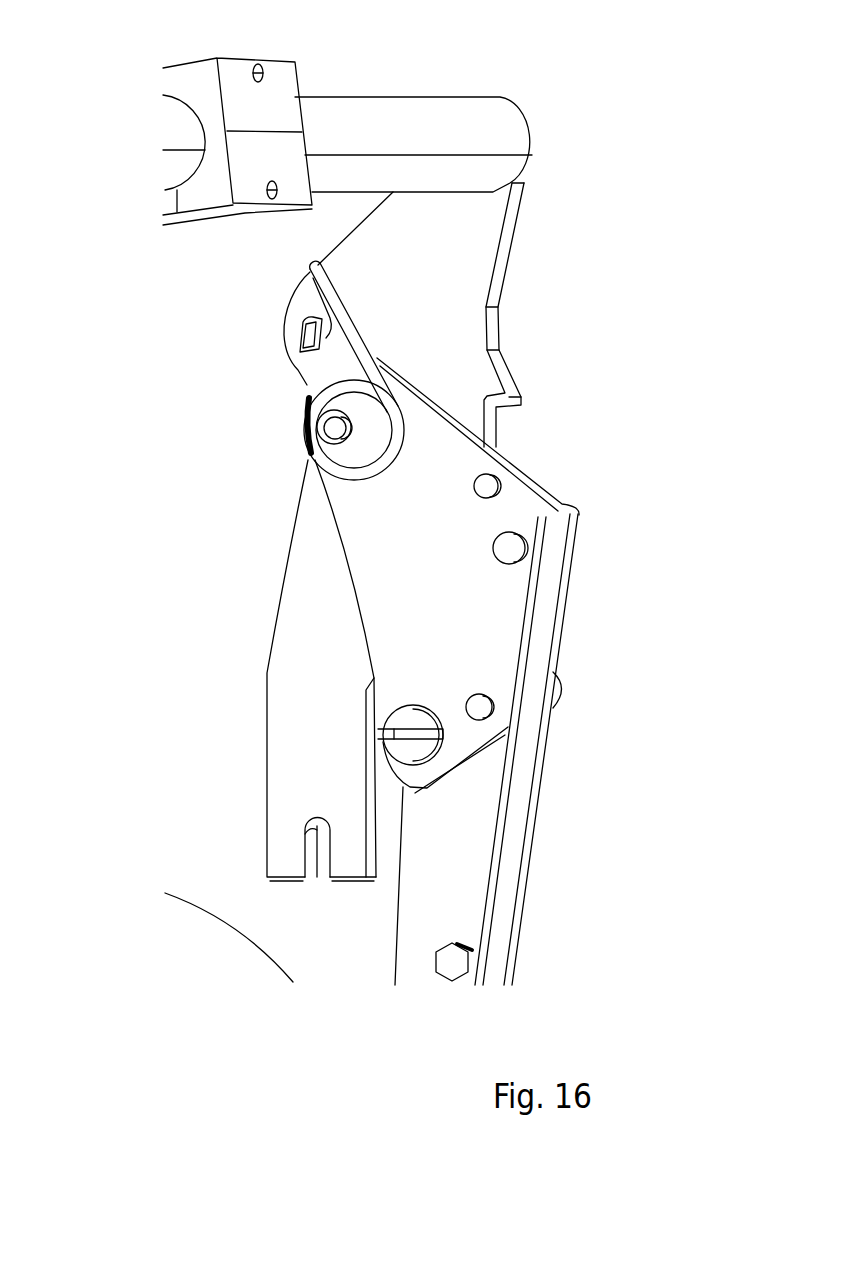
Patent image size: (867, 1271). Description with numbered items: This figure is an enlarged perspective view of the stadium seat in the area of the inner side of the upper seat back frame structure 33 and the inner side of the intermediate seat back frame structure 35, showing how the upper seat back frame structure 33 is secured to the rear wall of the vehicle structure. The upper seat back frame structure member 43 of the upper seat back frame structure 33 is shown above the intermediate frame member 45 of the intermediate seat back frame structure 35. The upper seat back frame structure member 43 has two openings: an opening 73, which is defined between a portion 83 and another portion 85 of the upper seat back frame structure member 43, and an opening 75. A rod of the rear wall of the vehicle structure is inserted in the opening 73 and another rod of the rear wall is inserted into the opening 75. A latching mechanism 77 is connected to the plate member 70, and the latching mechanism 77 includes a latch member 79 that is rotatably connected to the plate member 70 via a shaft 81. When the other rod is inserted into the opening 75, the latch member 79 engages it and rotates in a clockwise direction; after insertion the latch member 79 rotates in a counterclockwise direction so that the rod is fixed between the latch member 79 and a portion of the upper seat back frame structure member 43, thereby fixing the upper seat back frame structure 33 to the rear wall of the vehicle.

The upper seat back frame structure 33 is at (540, 350).
The intermediate seat back frame structure 35 is at (558, 816).
The upper seat back frame structure member 43 is at (487, 250).
The intermediate frame member 45 is at (457, 903).
The plate member 70 is at (463, 470).
The opening 73 is at (320, 863).
The opening 75 is at (318, 346).
The latching mechanism 77 is at (296, 436).
The latch member 79 is at (313, 384).
The shaft 81 is at (337, 430).
The upper seat back frame structure member portion 83 is at (290, 863).
The upper seat back frame structure member portion 85 is at (348, 853).